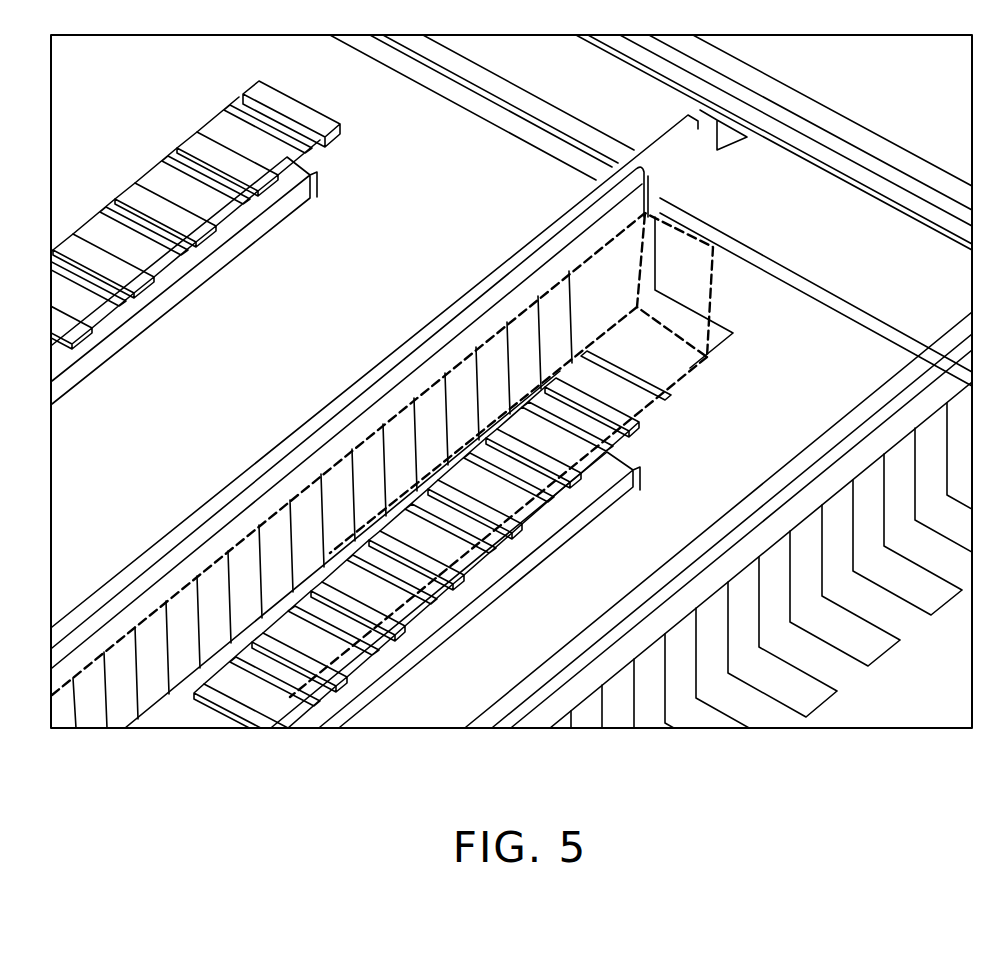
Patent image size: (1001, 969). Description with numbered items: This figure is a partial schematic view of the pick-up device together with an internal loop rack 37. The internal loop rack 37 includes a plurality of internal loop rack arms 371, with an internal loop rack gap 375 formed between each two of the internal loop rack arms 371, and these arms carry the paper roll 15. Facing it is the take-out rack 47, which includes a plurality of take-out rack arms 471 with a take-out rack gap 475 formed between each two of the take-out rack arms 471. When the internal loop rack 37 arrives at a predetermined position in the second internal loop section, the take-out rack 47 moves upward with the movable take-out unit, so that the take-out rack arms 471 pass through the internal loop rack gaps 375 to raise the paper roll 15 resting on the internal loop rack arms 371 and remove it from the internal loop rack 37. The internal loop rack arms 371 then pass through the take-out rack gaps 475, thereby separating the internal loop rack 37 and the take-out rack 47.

The paper roll 15 is at (683, 237).
The internal loop rack 37 is at (375, 343).
The internal loop rack arms 371 is at (278, 525).
The internal loop rack gap 375 is at (308, 510).
The take-out rack 47 is at (270, 222).
The take-out rack arms 471 is at (195, 143).
The take-out rack gap 475 is at (192, 185).